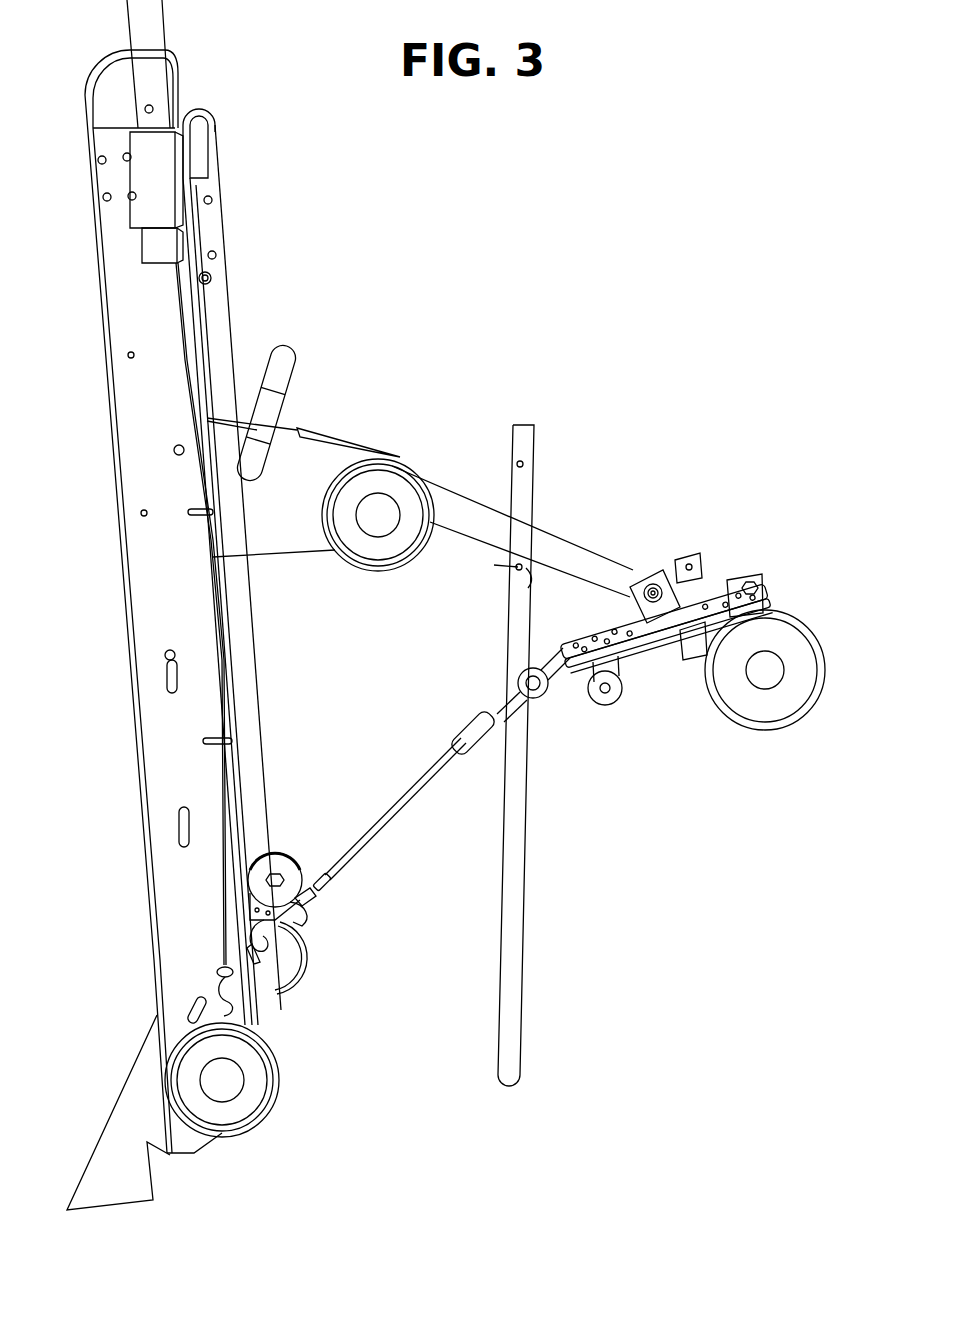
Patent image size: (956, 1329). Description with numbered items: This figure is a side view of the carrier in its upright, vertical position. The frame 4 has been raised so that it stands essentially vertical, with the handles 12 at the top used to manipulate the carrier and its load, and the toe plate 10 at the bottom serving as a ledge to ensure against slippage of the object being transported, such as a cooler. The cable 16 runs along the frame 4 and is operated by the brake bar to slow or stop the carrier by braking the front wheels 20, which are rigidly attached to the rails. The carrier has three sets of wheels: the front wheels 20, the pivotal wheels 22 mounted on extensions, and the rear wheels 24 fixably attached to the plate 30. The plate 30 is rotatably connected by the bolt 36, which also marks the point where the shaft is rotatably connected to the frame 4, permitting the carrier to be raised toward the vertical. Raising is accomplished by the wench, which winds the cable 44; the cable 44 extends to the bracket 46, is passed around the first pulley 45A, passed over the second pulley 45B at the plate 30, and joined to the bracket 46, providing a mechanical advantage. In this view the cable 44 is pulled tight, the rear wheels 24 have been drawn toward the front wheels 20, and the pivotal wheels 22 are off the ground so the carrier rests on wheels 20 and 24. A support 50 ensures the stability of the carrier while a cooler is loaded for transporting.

The frame 4 is at (157, 602).
The toe plate 10 is at (118, 1117).
The handles 12 is at (129, 27).
The cable 16 is at (232, 827).
The front wheels 20 is at (258, 1087).
The pivotal wheels 22 is at (397, 488).
The rear wheels 24 is at (783, 638).
The plate 30 is at (740, 577).
The bolt 36 is at (653, 597).
The cable 44 is at (382, 828).
The first pulley 45A is at (295, 872).
The second pulley 45B is at (483, 718).
The bracket 46 is at (258, 1000).
The support 50 is at (520, 825).